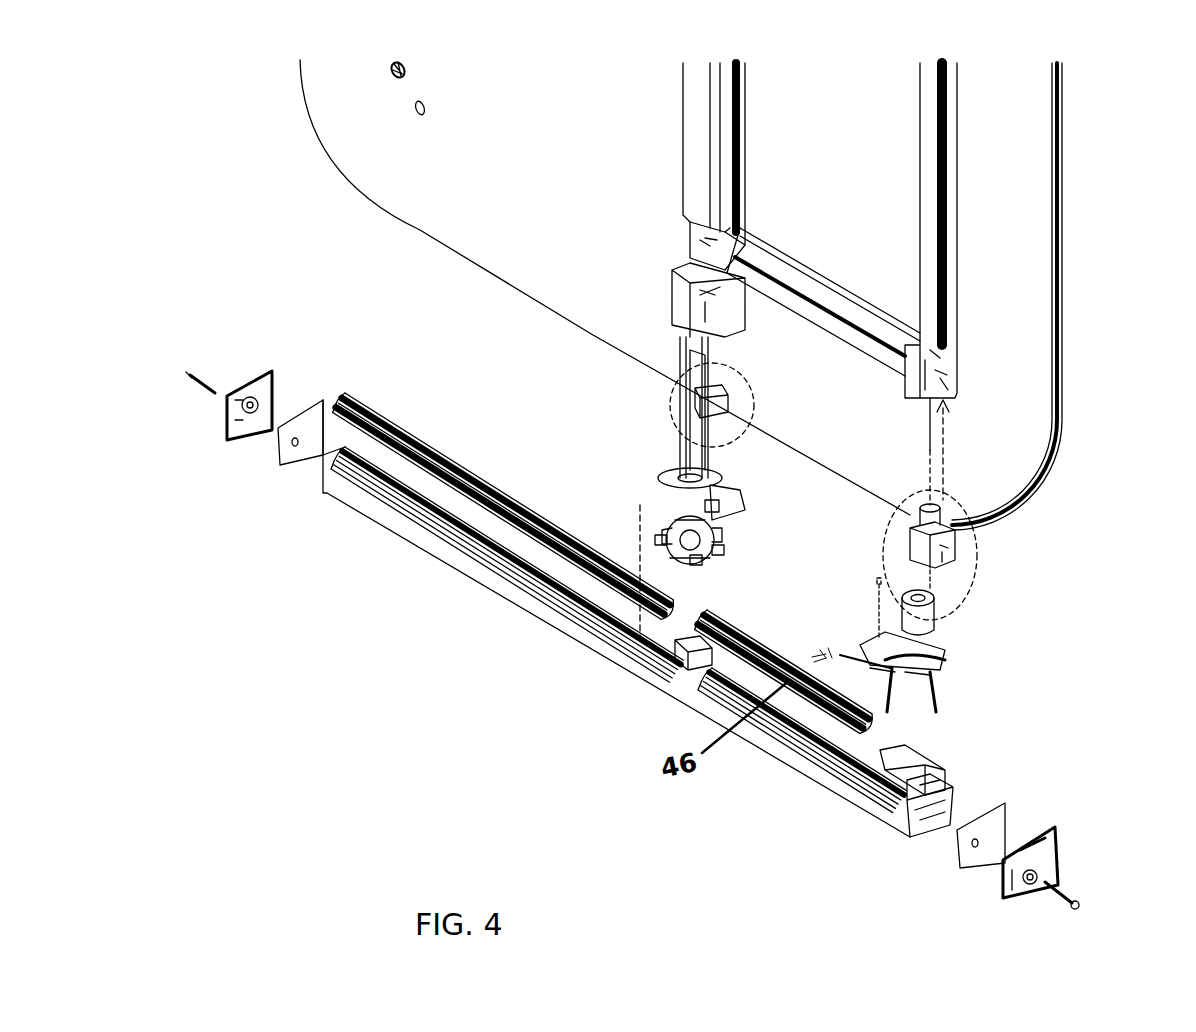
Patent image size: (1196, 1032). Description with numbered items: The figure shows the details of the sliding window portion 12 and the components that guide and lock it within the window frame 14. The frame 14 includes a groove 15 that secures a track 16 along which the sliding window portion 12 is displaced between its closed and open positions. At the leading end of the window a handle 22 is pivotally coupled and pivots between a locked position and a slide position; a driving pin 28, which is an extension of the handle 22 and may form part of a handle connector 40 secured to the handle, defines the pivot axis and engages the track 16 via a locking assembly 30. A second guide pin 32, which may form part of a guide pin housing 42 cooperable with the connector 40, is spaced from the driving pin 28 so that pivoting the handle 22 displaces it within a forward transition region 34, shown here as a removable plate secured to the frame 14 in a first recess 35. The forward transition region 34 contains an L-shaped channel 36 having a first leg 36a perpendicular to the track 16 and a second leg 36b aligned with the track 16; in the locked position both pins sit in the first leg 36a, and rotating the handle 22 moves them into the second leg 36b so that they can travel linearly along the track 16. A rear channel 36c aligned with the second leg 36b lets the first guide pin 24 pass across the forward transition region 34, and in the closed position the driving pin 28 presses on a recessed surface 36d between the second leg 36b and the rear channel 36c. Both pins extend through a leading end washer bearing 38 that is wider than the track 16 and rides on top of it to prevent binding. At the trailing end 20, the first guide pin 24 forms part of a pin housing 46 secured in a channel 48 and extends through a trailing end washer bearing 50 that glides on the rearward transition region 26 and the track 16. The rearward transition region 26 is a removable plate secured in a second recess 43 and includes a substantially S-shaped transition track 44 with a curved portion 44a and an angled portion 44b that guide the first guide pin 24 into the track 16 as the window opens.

The sliding window portion 12 is at (884, 92).
The window frame 14 is at (825, 775).
The groove 15 is at (430, 512).
The track 16 is at (412, 428).
The trailing end 20 is at (993, 245).
The handle 22 is at (683, 108).
The first guide pin 24 is at (913, 555).
The rearward transition region 26 is at (980, 669).
The driving pin 28 is at (675, 327).
The locking assembly 30 is at (764, 537).
The second guide pin 32 is at (700, 432).
The forward transition region 34 is at (720, 530).
The first recess 35 is at (680, 655).
The L-shaped channel 36 is at (688, 530).
The first leg 36a is at (715, 500).
The second leg 36b is at (670, 535).
The rear channel 36c is at (705, 563).
The recessed surface 36d is at (724, 550).
The leading end washer bearing 38 is at (675, 475).
The handle connector 40 is at (680, 285).
The guide pin housing 42 is at (722, 397).
The second recess 43 is at (915, 770).
The transition track 44 is at (870, 650).
The curved portion 44a is at (940, 700).
The angled portion 44b is at (894, 699).
The pin housing 46 is at (940, 528).
The channel 48 is at (950, 378).
The trailing end washer bearing 50 is at (935, 598).